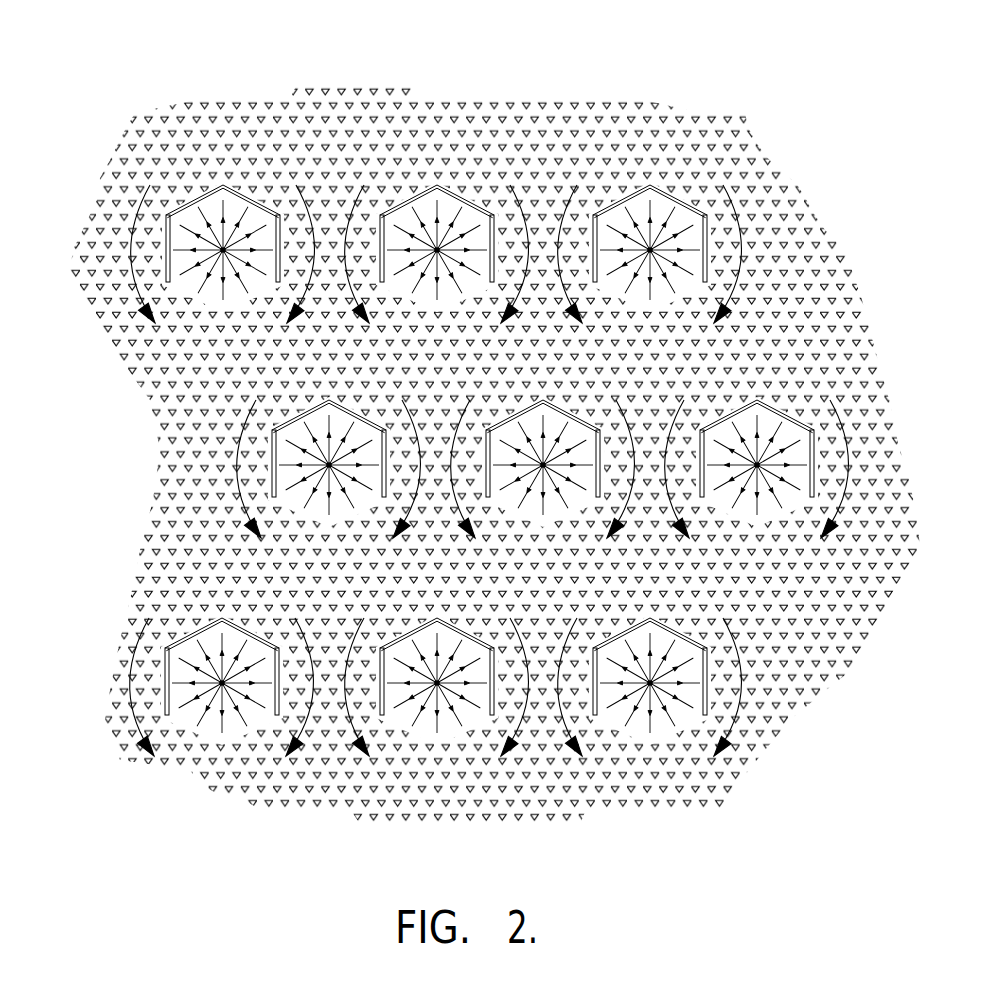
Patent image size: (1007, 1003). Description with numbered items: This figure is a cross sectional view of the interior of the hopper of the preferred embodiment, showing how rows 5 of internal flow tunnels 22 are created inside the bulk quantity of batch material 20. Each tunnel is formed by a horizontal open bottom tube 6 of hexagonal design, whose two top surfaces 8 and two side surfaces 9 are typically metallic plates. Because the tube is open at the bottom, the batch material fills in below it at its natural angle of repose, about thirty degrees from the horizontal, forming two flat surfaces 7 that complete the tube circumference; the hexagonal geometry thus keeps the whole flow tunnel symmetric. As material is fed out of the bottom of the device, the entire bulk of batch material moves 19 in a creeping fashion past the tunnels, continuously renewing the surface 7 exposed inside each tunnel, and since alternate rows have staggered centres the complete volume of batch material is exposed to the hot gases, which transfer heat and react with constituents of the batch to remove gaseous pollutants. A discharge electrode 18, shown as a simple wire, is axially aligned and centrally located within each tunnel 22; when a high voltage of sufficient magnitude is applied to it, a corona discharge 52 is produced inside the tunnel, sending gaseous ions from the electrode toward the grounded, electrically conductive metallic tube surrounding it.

The rows of internal flow tunnels 5 is at (150, 690).
The horizontal open bottom tube 6 is at (154, 618).
The surface 7 is at (169, 714).
The top surfaces 8 is at (223, 117).
The side surfaces 9 is at (437, 151).
The discharge electrode 18 is at (149, 250).
The movement of batch material 19 is at (233, 468).
The batch material 20 is at (190, 552).
The internal flow tunnel 22 is at (214, 417).
The corona discharge 52 is at (733, 685).